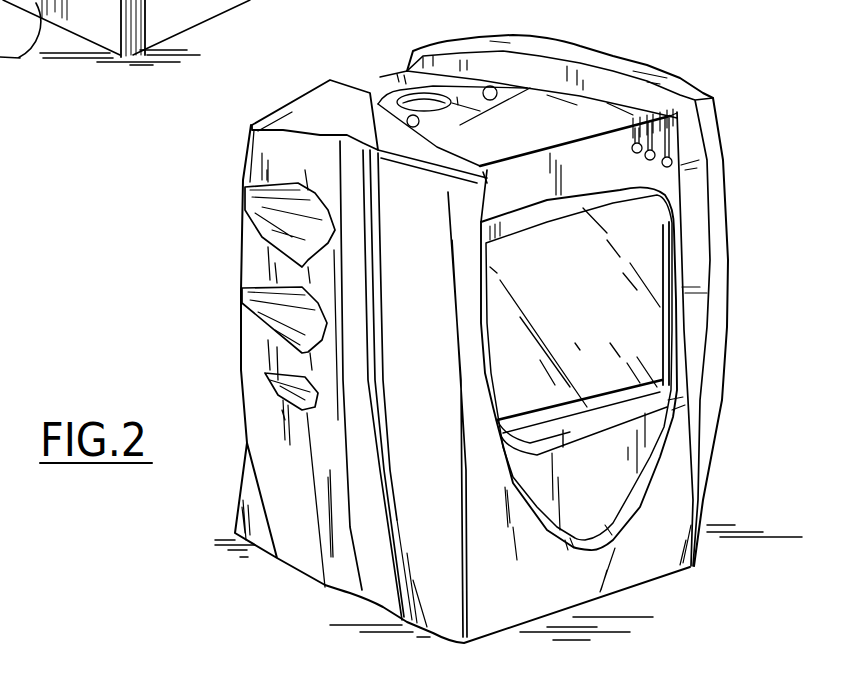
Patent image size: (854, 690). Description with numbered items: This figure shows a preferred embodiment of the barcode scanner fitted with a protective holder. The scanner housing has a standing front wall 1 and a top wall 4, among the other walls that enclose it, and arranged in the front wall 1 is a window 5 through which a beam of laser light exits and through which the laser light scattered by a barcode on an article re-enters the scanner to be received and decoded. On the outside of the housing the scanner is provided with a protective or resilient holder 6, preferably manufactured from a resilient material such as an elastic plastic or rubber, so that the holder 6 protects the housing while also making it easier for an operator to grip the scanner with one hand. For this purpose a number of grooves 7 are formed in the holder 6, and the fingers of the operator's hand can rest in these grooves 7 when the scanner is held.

The front wall 1 is at (723, 625).
The top wall 4 is at (540, 110).
The window 5 is at (592, 299).
The protective or resilient holder 6 is at (711, 141).
The grooves 7 is at (245, 210).